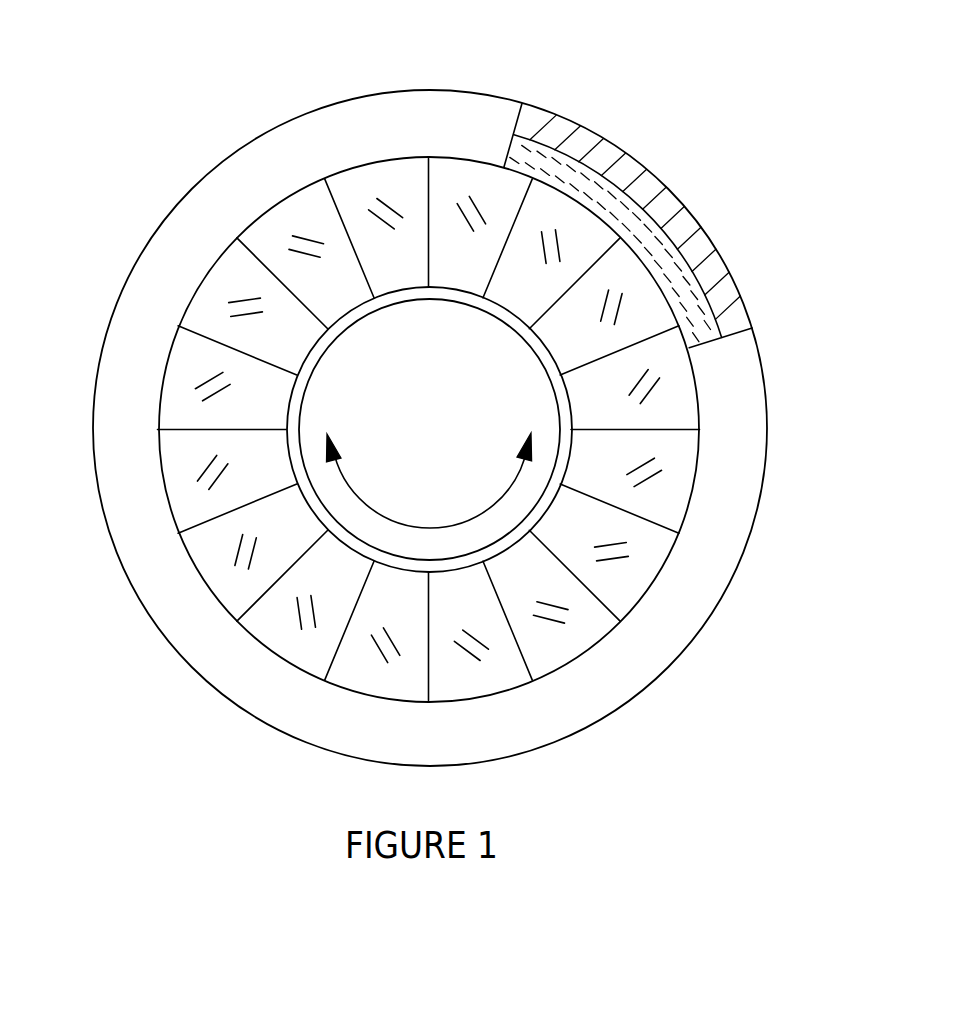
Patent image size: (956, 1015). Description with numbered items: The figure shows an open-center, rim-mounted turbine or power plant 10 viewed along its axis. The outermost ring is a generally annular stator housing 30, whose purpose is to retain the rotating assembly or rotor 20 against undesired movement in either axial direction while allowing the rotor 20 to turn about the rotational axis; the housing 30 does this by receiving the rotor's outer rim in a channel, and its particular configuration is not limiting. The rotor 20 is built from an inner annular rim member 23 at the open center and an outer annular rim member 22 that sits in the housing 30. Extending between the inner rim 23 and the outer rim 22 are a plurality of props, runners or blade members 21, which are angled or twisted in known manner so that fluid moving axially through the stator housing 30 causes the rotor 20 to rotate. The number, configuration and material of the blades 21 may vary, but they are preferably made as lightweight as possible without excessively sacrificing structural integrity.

The turbine or power plant 10 is at (200, 122).
The rotating assembly or rotor 20 is at (440, 305).
The blade members 21 is at (202, 477).
The outer annular rim member 22 is at (653, 247).
The inner annular rim member 23 is at (557, 395).
The stator housing 30 is at (686, 646).